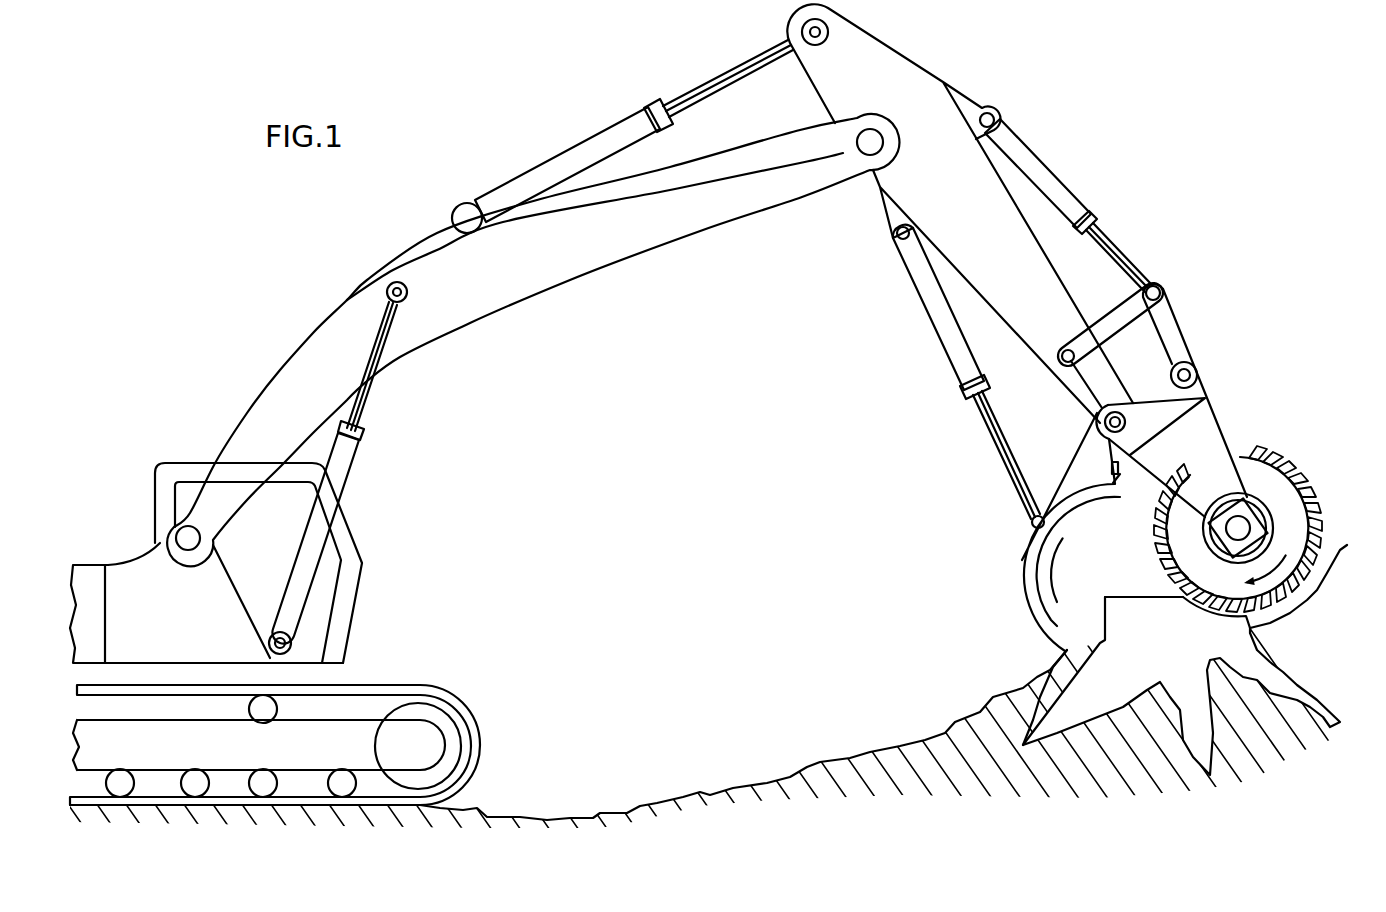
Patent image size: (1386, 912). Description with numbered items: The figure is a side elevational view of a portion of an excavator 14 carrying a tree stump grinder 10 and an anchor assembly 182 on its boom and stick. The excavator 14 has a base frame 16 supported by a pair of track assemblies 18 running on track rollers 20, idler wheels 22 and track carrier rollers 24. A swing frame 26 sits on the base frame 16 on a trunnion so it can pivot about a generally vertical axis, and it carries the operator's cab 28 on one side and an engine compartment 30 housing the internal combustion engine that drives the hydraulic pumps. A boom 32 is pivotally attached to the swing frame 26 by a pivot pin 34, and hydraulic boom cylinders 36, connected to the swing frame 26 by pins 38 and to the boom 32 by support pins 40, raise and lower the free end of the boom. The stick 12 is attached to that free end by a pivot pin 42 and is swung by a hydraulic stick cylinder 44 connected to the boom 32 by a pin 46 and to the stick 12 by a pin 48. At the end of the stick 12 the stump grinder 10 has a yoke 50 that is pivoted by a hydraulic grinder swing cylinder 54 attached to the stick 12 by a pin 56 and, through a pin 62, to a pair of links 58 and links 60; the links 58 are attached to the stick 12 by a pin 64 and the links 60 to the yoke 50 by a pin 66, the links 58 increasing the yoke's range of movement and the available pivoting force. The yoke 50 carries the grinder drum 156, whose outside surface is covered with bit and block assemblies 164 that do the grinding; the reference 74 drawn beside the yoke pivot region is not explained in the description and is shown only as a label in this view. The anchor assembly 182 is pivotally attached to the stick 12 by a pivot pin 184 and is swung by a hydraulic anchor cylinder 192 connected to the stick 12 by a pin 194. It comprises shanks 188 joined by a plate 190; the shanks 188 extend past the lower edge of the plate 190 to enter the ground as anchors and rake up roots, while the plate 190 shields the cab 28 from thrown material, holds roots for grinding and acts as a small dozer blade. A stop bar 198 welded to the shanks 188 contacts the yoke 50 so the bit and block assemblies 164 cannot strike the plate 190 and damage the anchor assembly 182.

The tree stump grinder 10 is at (1312, 452).
The stick 12 is at (945, 210).
The excavator 14 is at (138, 480).
The base frame 16 is at (311, 759).
The track assemblies 18 is at (467, 703).
The track rollers 20 is at (209, 783).
The idler wheels 22 is at (462, 752).
The track carrier rollers 24 is at (249, 707).
The swing frame 26 is at (305, 668).
The operator's cab 28 is at (357, 578).
The engine compartment 30 is at (90, 566).
The boom 32 is at (557, 268).
The pivot pin 34 is at (183, 555).
The hydraulic boom cylinders 36 is at (355, 497).
The pins 38 is at (265, 652).
The support pins 40 is at (410, 292).
The pivot pin 42 is at (863, 156).
The hydraulic stick cylinder 44 is at (587, 148).
The pin 46 is at (456, 208).
The pin 48 is at (800, 34).
The yoke 50 is at (1212, 428).
The hydraulic grinder swing cylinder 54 is at (1043, 170).
The pin 56 is at (997, 118).
The links 58 is at (1110, 320).
The links 60 is at (1180, 338).
The pin 62 is at (1160, 290).
The pin 64 is at (1061, 365).
The pin 66 is at (1197, 372).
The stick end pivot pin 74 is at (1195, 392).
The grinder drum 156 is at (1262, 477).
The bit and block assemblies 164 is at (1143, 555).
The anchor assembly 182 is at (1012, 531).
The pivot pin 184 is at (1130, 422).
The shanks 188 is at (1030, 600).
The plate 190 is at (1058, 582).
The hydraulic anchor cylinder 192 is at (935, 360).
The pin 194 is at (897, 237).
The stop bar 198 is at (1124, 473).